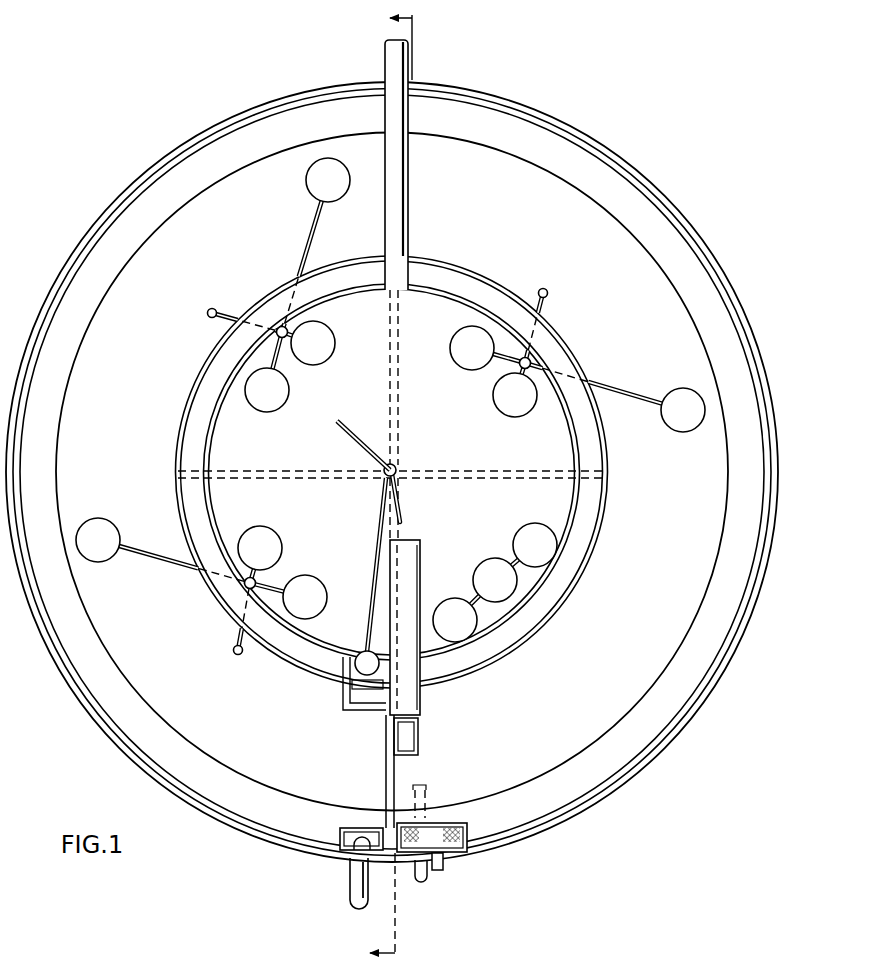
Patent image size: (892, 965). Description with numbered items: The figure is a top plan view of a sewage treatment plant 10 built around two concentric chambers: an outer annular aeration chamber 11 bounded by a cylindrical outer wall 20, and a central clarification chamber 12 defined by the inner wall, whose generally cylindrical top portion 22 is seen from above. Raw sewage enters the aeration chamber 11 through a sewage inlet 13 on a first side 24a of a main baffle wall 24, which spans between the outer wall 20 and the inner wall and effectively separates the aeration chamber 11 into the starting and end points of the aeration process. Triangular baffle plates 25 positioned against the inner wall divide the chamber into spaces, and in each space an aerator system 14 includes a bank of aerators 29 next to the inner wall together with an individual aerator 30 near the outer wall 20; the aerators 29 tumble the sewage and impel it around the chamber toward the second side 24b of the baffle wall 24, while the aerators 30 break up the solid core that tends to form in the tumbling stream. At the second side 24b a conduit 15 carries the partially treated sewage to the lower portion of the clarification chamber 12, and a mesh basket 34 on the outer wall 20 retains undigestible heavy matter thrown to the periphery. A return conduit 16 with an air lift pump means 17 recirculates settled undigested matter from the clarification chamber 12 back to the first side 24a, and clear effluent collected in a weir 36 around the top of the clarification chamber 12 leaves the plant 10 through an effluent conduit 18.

The sewage treatment plant 10 is at (580, 100).
The aeration chamber 11 is at (533, 212).
The clarification chamber 12 is at (452, 457).
The sewage inlet 13 is at (352, 885).
The aerators 14 is at (313, 378).
The conduit 15 is at (420, 572).
The conduit 16 is at (373, 566).
The pump means 17 is at (356, 651).
The conduit 18 is at (385, 53).
The cylindrical outer wall 20 is at (146, 178).
The cylindrical top portion 22 is at (598, 521).
The main baffle wall 24 is at (392, 773).
The first side 24a is at (386, 789).
The second side 24b is at (416, 788).
The baffle plates 25 is at (388, 352).
The aerators 29 is at (330, 330).
The individual aerator 30 is at (306, 184).
The mesh basket 34 is at (442, 860).
The weir 36 is at (490, 290).